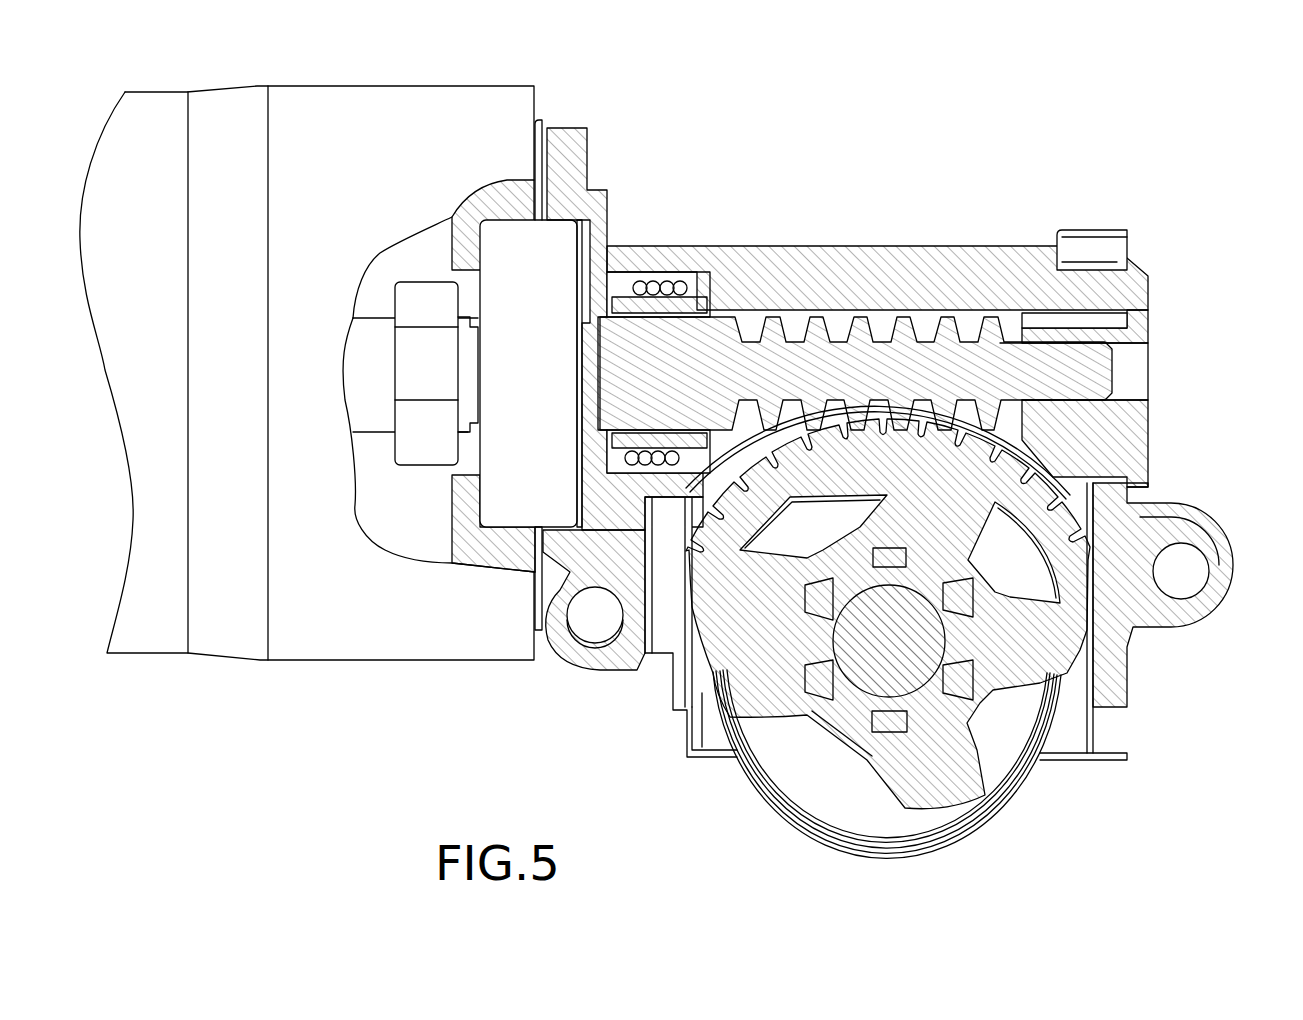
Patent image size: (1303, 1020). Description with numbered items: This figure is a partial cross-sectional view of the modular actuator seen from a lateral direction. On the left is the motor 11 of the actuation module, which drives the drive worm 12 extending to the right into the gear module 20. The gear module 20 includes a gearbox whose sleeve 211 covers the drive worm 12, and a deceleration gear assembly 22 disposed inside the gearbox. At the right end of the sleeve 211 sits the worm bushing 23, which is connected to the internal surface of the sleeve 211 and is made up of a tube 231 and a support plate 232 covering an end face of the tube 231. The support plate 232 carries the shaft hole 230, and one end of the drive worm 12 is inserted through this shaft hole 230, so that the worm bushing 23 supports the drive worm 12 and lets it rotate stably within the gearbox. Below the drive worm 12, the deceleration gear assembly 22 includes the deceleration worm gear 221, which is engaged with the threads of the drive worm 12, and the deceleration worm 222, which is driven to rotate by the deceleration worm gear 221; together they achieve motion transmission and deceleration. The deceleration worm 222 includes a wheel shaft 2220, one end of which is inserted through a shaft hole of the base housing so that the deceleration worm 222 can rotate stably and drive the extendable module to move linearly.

The motor 11 is at (488, 108).
The drive worm 12 is at (888, 360).
The gear module 20 is at (972, 200).
The sleeve 211 is at (763, 257).
The tube 231 is at (1012, 285).
The worm bushing 23 is at (1131, 325).
The shaft hole 230 is at (1135, 367).
The support plate 232 is at (1128, 437).
The deceleration worm gear 221 is at (1053, 500).
The deceleration gear assembly 22 is at (953, 647).
The wheel shaft 2220 is at (920, 663).
The deceleration worm 222 is at (1023, 780).